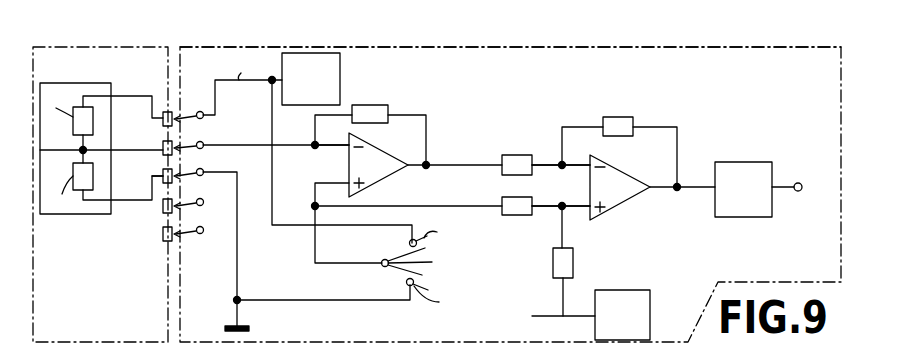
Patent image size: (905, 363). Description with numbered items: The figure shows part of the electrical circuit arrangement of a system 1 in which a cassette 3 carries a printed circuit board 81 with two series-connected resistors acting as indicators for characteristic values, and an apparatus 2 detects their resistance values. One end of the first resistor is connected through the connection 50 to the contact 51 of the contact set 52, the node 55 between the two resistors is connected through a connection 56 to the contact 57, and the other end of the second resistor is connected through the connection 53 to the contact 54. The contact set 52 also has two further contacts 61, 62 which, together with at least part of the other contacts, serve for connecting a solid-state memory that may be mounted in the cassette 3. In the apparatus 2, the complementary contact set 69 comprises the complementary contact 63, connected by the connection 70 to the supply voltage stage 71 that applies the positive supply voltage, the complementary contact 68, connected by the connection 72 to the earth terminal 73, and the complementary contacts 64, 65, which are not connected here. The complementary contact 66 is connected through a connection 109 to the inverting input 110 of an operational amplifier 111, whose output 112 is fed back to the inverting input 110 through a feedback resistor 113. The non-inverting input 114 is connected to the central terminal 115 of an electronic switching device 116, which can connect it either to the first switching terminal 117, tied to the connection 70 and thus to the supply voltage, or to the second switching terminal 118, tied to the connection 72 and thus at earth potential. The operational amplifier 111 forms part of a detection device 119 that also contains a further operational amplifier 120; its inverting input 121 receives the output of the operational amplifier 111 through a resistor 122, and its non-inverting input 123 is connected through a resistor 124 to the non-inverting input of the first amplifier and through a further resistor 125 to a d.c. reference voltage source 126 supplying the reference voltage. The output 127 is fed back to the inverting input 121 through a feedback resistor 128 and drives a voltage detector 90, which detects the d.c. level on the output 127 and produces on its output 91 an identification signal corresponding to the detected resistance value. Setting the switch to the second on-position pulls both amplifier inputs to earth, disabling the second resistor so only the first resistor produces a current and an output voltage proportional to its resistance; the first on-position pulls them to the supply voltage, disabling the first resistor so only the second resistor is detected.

The cassette 3 is at (93, 44).
The system 1 is at (170, 40).
The apparatus 2 is at (627, 46).
The detection device 119 is at (652, 158).
The printed circuit board 81 is at (72, 214).
The connection 50 is at (152, 97).
The node 55 is at (80, 151).
The connection 53 is at (122, 201).
The contact set 52 is at (147, 203).
The contact 51 is at (163, 124).
The connection 56 is at (160, 150).
The contact 57 is at (163, 160).
The contact 54 is at (163, 176).
The further contact 61 is at (163, 210).
The further contact 62 is at (163, 240).
The complementary contact set 69 is at (205, 212).
The complementary contact 63 is at (180, 119).
The complementary contact 66 is at (180, 147).
The complementary contact 68 is at (180, 176).
The complementary contact 64 is at (180, 206).
The complementary contact 65 is at (180, 234).
The connection 70 is at (213, 100).
The supply voltage stage 71 is at (330, 70).
The connection 109 is at (253, 146).
The inverting input 110 is at (345, 147).
The non-inverting input 114 is at (348, 183).
The operational amplifier 111 is at (376, 158).
The feedback resistor 113 is at (376, 112).
The output 112 is at (427, 163).
The resistor 122 is at (509, 156).
The resistor 124 is at (500, 199).
The first switching terminal 117 is at (409, 244).
The central terminal 115 is at (380, 264).
The electronic switching device 116 is at (434, 259).
The second switching terminal 118 is at (406, 283).
The connection 72 is at (238, 218).
The earth terminal 73 is at (248, 327).
The inverting input 121 is at (587, 170).
The non-inverting input 123 is at (588, 208).
The further operational amplifier 120 is at (623, 182).
The feedback resistor 128 is at (615, 117).
The output 127 is at (676, 191).
The further resistor 125 is at (553, 262).
The d.c. reference voltage source 126 is at (643, 305).
The voltage detector 90 is at (752, 173).
The output 91 is at (802, 189).